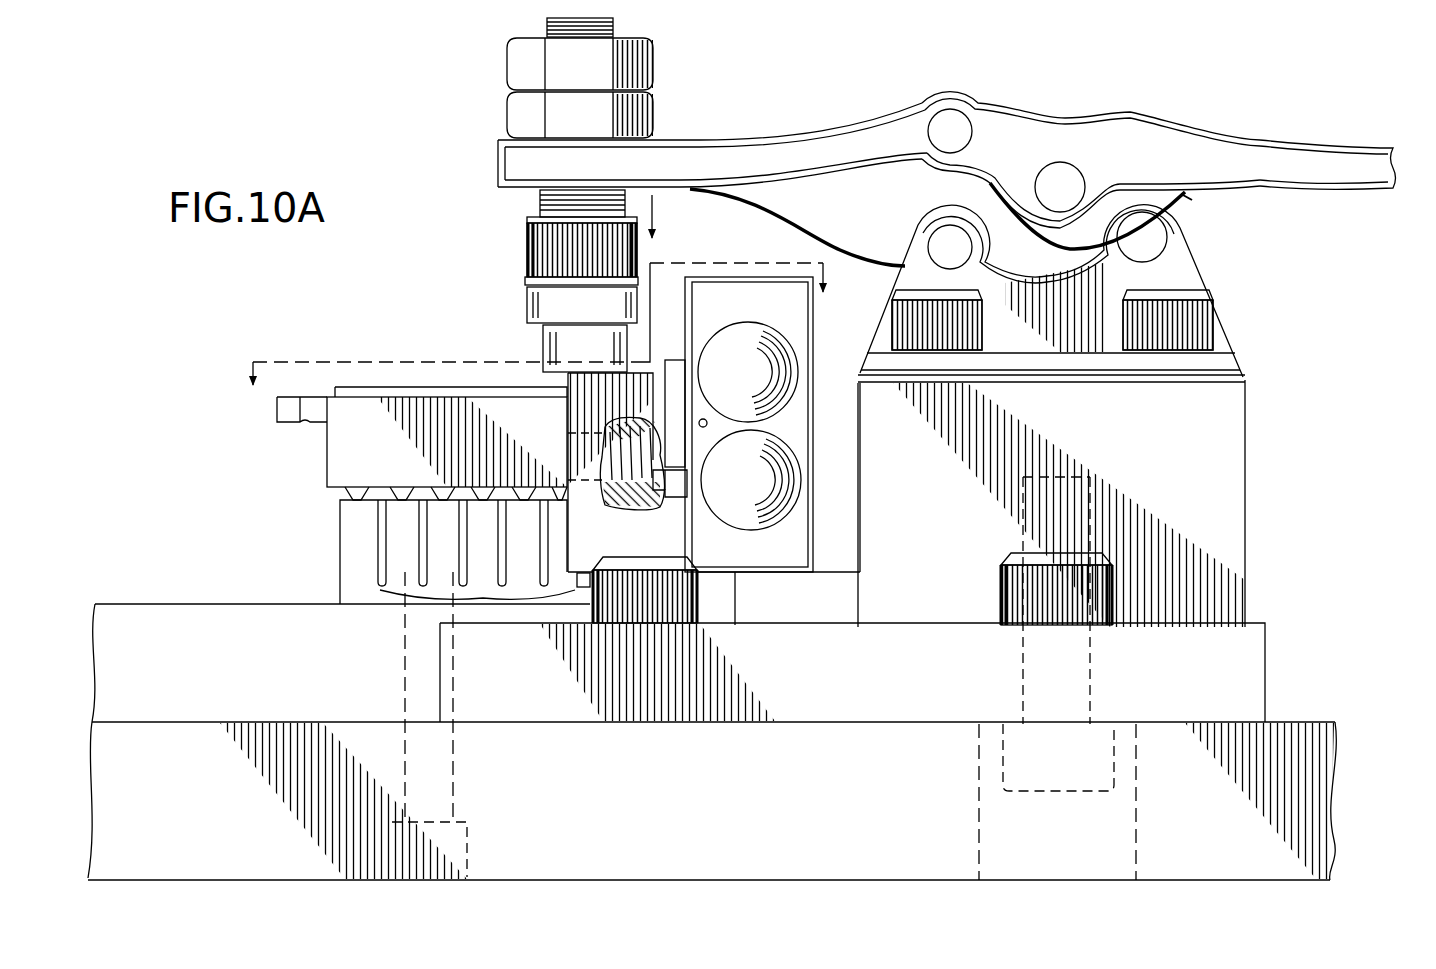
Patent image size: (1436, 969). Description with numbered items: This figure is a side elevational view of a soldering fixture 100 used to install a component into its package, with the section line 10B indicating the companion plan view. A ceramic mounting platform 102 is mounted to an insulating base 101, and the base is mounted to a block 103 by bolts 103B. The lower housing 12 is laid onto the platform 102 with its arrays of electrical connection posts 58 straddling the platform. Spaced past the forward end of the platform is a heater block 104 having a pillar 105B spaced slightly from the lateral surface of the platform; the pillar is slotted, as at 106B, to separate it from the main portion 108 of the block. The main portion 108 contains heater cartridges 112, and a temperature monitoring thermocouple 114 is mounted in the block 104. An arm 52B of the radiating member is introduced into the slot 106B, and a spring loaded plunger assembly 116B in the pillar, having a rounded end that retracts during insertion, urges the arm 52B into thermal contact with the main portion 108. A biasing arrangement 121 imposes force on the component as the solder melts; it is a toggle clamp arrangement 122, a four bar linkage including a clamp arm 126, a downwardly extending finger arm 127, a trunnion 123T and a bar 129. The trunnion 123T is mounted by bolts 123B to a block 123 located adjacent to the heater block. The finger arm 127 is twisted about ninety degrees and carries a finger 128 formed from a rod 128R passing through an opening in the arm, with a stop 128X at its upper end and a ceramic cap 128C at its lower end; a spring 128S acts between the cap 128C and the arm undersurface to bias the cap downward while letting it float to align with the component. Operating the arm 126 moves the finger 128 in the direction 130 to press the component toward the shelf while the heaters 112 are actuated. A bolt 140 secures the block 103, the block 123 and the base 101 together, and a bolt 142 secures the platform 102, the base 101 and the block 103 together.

The soldering fixture 100 is at (430, 220).
The lower housing 12 is at (377, 388).
The extending arm 52B is at (677, 367).
The electrical connection posts 58 is at (483, 600).
The insulating base 101 is at (150, 625).
The ceramic mounting platform 102 is at (355, 555).
The block 103 is at (1309, 806).
The bolts 103B is at (695, 625).
The heater block 104 is at (848, 412).
The pillar 105B is at (595, 507).
The slot 106B is at (680, 485).
The main portion of the heater block 108 is at (787, 320).
The heater cartridges 112 is at (790, 490).
The temperature monitoring thermocouple 114 is at (706, 427).
The spring loaded plunger assembly 116B is at (627, 503).
The biasing arrangement 121 is at (812, 112).
The toggle clamp arrangement 122 is at (1225, 102).
The block 123 is at (1225, 483).
The trunnion 123T is at (1185, 270).
The bolts 123B is at (985, 322).
The clamp arm 126 is at (1330, 160).
The finger arm 127 is at (805, 214).
The finger 128 is at (703, 88).
The stop 128X is at (522, 115).
The spring 128S is at (542, 202).
The rod 128R is at (540, 205).
The ceramic cap 128C is at (538, 350).
The bar 129 is at (1195, 197).
The direction of finger movement 130 is at (676, 216).
The bolt 140 is at (1114, 761).
The bolt 142 is at (470, 840).
The section line 10B is at (538, 337).